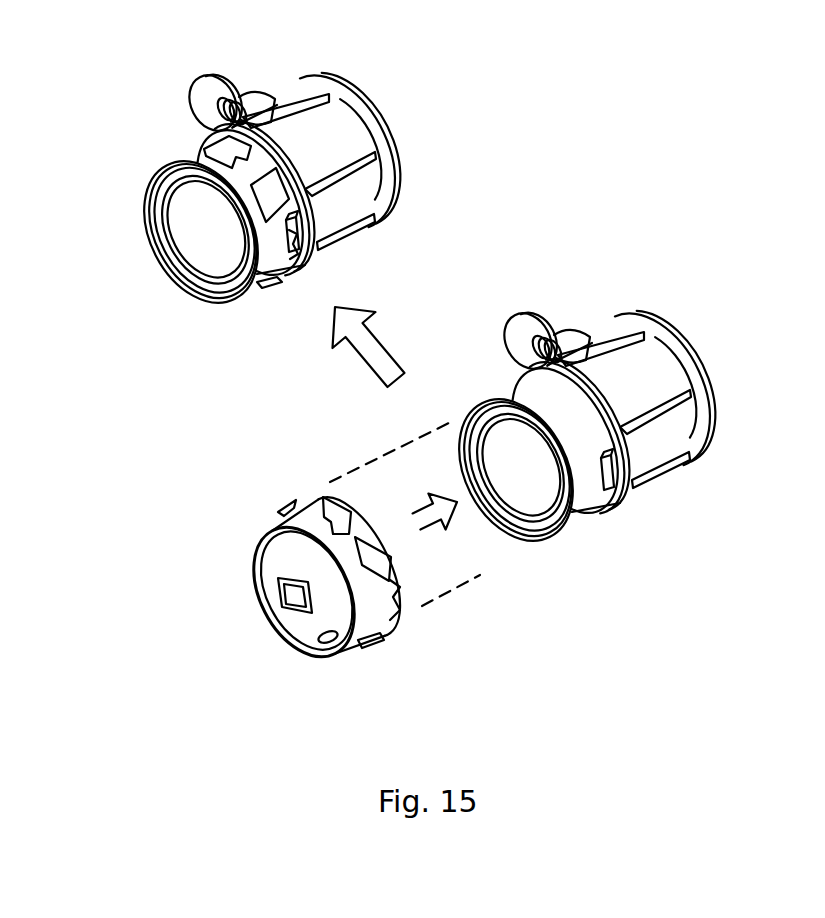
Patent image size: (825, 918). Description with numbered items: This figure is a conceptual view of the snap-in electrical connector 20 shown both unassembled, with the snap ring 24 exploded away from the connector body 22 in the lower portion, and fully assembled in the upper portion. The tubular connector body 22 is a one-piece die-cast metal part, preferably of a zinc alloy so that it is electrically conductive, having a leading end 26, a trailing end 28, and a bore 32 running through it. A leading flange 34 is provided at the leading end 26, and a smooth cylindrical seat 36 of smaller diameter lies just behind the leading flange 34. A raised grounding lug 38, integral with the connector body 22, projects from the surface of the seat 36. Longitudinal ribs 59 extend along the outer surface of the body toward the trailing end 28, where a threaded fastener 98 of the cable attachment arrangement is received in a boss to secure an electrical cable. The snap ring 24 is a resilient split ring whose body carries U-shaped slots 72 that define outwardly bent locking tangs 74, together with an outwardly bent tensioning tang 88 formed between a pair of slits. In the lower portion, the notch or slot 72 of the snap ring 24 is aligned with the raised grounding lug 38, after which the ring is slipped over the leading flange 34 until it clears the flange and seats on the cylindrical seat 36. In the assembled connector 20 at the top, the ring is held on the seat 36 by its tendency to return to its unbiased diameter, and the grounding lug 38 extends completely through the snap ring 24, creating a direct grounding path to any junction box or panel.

The snap-in electrical connector 20 is at (103, 92).
The connector body 22 is at (664, 524).
The snap ring 24 is at (408, 674).
The leading end 26 is at (157, 257).
The trailing end 28 is at (372, 112).
The bore 32 is at (184, 222).
The leading flange 34 is at (175, 163).
The cylindrical seat 36 is at (588, 442).
The raised grounding lug 38 is at (300, 233).
The longitudinal ribs 59 is at (342, 182).
The U-shaped slots 72 is at (293, 235).
The locking tangs 74 is at (272, 283).
The tensioning tang 88 is at (282, 555).
The threaded fastener 98 is at (217, 78).